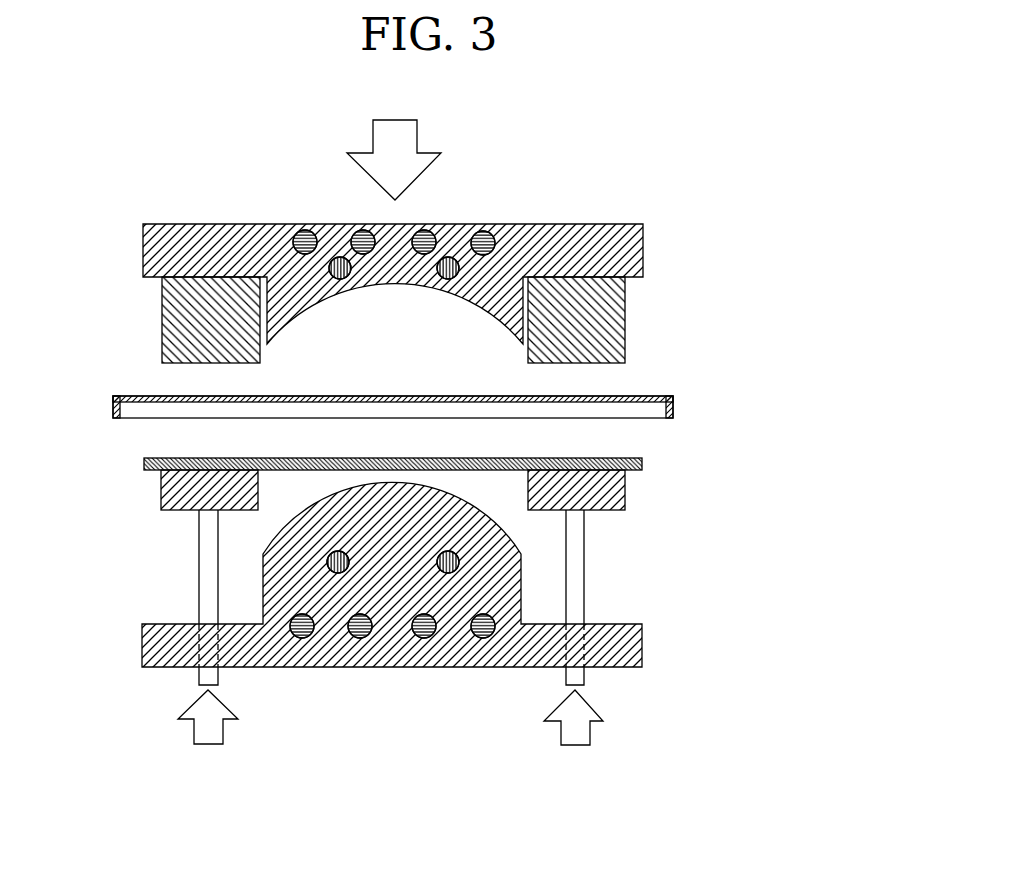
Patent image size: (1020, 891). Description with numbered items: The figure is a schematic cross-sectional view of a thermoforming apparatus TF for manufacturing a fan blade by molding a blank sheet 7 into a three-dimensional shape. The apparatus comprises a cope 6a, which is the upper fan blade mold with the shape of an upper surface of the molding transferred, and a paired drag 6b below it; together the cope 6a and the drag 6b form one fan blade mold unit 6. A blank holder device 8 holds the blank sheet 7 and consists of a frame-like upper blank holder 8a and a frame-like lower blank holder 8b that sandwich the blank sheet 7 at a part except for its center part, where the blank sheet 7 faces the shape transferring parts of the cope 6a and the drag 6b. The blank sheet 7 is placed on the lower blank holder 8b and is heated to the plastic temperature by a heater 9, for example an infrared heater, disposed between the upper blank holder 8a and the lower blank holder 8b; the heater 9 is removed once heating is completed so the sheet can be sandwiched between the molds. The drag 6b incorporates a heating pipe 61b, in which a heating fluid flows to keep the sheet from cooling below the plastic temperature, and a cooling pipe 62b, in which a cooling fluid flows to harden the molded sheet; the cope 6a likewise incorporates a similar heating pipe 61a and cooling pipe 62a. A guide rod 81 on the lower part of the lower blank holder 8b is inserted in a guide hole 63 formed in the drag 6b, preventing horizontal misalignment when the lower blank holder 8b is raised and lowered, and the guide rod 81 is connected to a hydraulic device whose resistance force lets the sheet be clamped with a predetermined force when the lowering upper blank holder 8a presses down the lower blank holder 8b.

The thermoforming apparatus TF is at (556, 184).
The fan blade mold unit 6 is at (447, 675).
The cope 6a is at (327, 305).
The drag 6b is at (293, 521).
The heating pipe 61a is at (478, 232).
The cooling pipe 62a is at (440, 276).
The heating pipe 61b is at (480, 638).
The cooling pipe 62b is at (349, 560).
The guide hole 63 is at (602, 652).
The blank sheet 7 is at (144, 461).
The blank holder device 8 is at (752, 378).
The upper blank holder 8a is at (625, 352).
The lower blank holder 8b is at (625, 492).
The guide rod 81 is at (586, 562).
The heater 9 is at (143, 411).